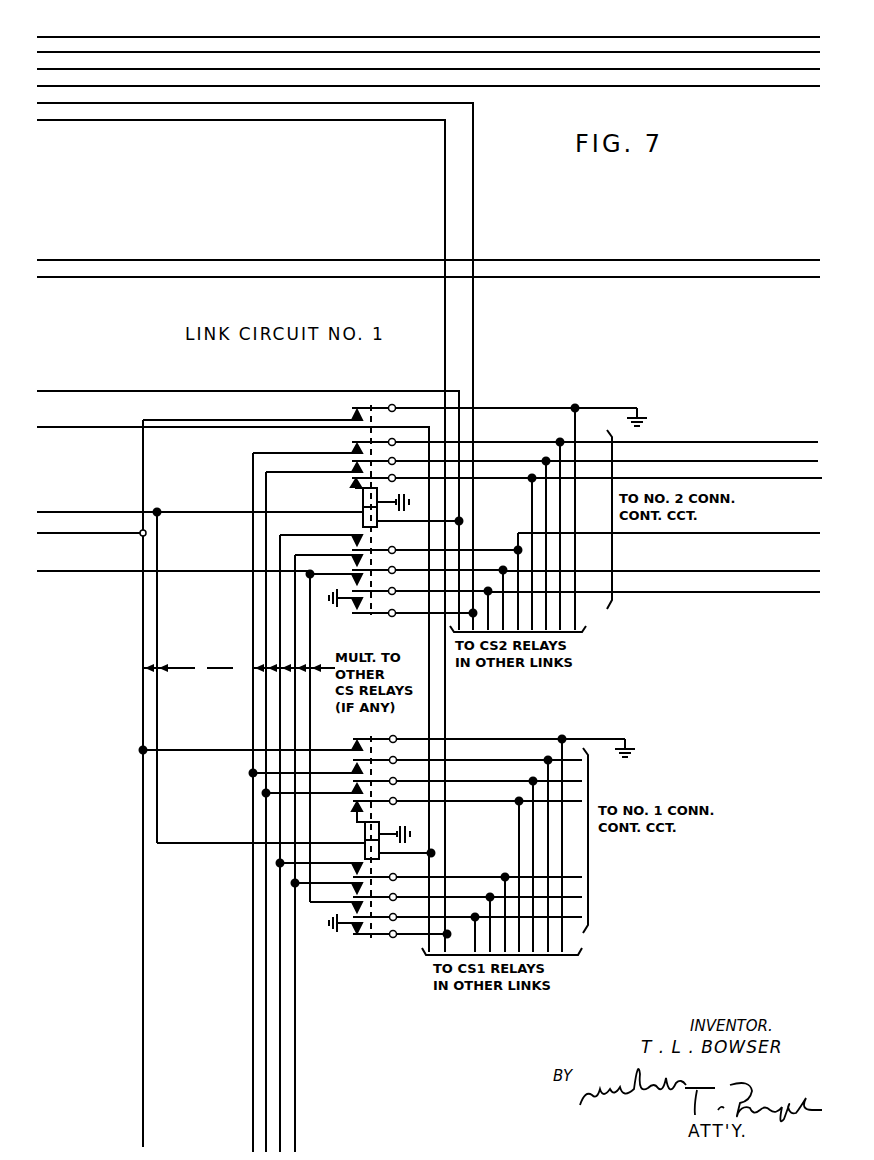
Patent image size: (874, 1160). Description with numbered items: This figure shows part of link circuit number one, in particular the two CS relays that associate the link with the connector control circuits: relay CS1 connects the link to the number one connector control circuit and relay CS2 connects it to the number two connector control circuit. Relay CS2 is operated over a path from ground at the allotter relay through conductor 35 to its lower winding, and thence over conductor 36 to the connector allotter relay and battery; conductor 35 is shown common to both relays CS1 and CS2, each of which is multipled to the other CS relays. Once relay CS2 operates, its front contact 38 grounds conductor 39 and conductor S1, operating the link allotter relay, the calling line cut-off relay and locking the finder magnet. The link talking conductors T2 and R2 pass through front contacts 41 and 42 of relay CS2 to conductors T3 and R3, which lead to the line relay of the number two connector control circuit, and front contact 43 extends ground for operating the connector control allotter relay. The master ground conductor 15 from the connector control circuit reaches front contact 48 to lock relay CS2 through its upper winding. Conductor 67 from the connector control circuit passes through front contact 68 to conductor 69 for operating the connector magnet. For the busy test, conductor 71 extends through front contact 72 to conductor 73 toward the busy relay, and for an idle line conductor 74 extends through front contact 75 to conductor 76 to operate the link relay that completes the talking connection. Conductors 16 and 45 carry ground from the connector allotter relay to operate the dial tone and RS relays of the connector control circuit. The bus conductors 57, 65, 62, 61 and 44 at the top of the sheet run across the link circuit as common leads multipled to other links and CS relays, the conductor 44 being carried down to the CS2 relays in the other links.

The conductor 57 is at (40, 37).
The conductor 65 is at (80, 52).
The conductor 62 is at (40, 69).
The conductor 61 is at (40, 86).
The conductor 44 is at (40, 103).
The conductor 16 is at (40, 260).
The conductor 45 is at (40, 278).
The conductor 36 is at (40, 391).
The front contact 38 is at (340, 418).
The front contact 72 is at (340, 452).
The front contact 75 is at (340, 471).
The front contact 48 is at (346, 488).
The conductor 35 is at (40, 512).
The conductor 39 is at (40, 533).
The conductor 69 is at (40, 571).
The front contact 41 is at (352, 553).
The front contact 42 is at (352, 573).
The front contact 68 is at (344, 590).
The front contact 43 is at (350, 615).
The conductor 73 is at (778, 442).
The conductor 74 is at (778, 461).
The master ground conductor 15 is at (808, 479).
The conductor 67 is at (762, 592).
The conductor 76 is at (264, 1098).
The conductor 71 is at (253, 1124).
The relay CS2 is at (361, 508).
The relay CS1 is at (358, 836).
The conductor S1 is at (145, 1100).
The conductor T2 is at (282, 1104).
The conductor R2 is at (296, 1127).
The conductor T3 is at (762, 533).
The conductor R3 is at (762, 571).